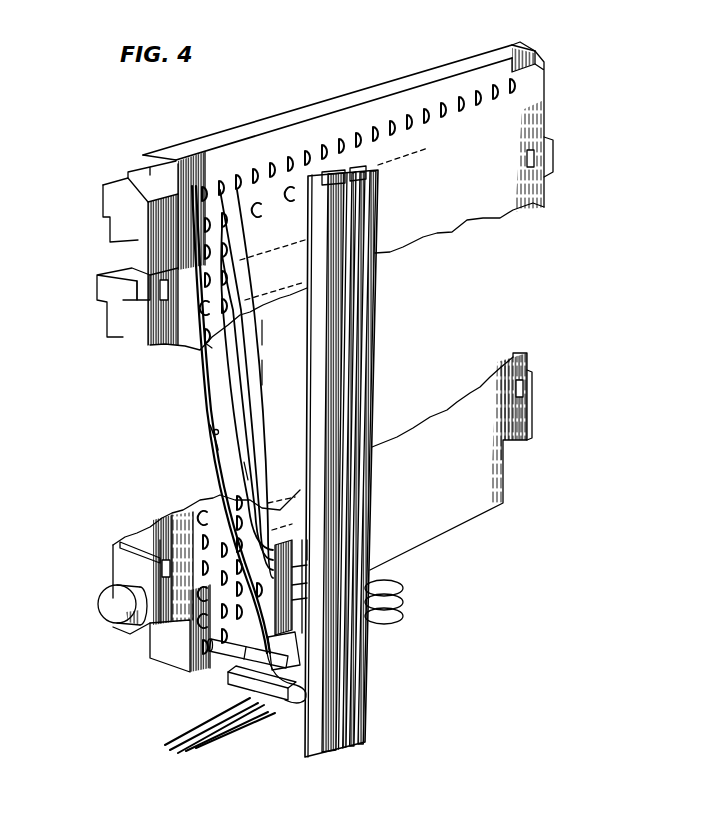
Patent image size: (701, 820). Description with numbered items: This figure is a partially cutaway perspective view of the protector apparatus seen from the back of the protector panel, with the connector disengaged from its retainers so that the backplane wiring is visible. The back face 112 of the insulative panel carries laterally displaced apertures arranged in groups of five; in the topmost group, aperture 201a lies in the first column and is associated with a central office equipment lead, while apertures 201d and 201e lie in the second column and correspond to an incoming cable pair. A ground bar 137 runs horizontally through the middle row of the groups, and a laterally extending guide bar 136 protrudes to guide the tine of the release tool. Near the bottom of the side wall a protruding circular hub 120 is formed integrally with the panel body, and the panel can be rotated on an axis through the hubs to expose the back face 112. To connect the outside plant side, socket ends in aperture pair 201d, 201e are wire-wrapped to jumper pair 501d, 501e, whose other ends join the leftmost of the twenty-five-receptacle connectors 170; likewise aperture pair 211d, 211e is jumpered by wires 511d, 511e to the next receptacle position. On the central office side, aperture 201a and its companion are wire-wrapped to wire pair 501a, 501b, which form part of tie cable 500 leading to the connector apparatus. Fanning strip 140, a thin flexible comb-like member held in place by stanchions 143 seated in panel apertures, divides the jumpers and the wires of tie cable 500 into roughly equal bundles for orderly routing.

The back face 112 is at (450, 205).
The ground bar 137 is at (520, 52).
The guide bar 136 is at (100, 284).
The circular hub 120 is at (104, 600).
The connector 170 is at (380, 287).
The aperture 201a is at (190, 186).
The aperture 201d is at (222, 186).
The aperture 201e is at (235, 240).
The aperture 211d is at (247, 280).
The jumper wire 511e is at (255, 330).
The jumper wire 501d is at (262, 340).
The jumper wire 501e is at (262, 374).
The aperture 211e is at (275, 322).
The wire 501a is at (204, 398).
The wire 501b is at (214, 432).
The jumper wire 511d is at (246, 470).
The fanning strip 140 is at (283, 702).
The stanchion 143 is at (220, 662).
The tie cable 500 is at (192, 724).